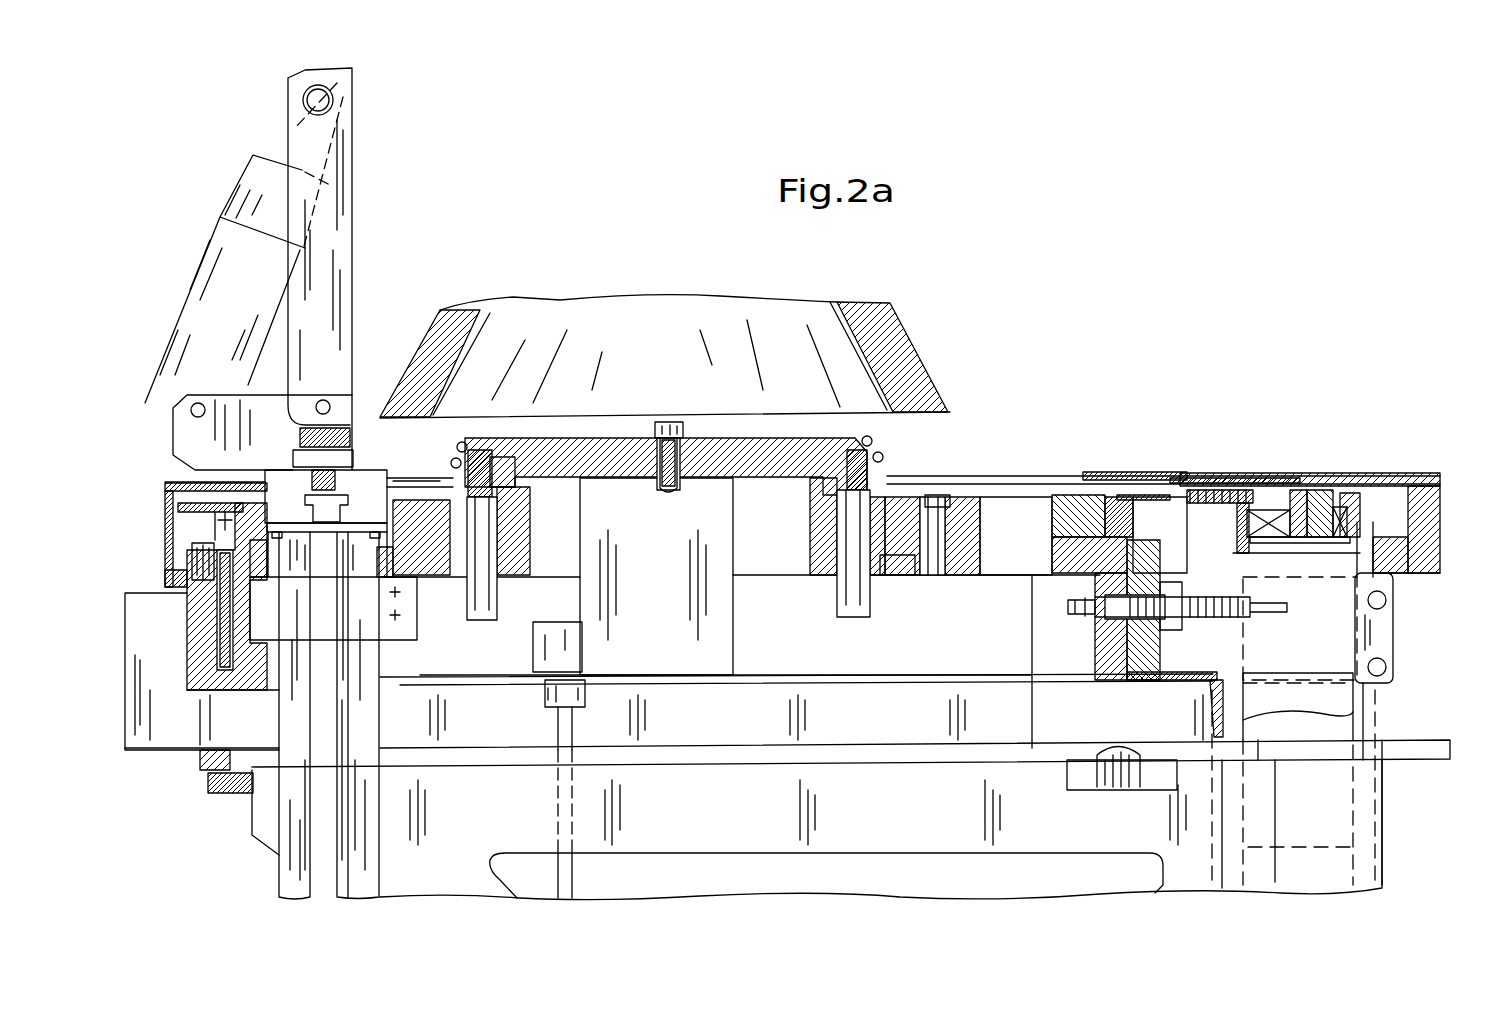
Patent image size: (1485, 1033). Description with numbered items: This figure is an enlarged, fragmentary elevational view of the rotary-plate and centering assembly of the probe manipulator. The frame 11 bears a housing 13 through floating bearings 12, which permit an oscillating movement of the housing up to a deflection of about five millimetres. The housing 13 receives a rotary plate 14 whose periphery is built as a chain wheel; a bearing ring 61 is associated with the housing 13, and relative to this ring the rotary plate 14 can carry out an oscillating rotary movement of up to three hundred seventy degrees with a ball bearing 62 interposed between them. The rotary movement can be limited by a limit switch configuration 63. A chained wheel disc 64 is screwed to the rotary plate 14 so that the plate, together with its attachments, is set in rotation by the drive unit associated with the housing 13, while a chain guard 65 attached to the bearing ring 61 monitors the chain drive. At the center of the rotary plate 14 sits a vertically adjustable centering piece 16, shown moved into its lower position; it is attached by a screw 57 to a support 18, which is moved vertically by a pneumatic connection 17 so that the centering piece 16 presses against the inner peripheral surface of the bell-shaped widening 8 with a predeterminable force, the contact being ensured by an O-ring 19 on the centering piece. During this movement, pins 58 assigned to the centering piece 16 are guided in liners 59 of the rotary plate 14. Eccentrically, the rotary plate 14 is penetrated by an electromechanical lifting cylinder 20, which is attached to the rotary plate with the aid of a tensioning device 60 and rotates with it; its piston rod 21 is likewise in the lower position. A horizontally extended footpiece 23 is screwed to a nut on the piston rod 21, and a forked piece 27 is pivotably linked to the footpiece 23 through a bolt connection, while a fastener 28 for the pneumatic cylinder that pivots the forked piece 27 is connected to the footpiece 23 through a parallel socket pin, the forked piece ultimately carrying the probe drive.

The bell-shaped widening 8 is at (898, 350).
The frame 11 is at (860, 830).
The floating bearings 12 is at (1118, 782).
The housing 13 is at (150, 738).
The rotary plate 14 is at (963, 505).
The centering piece 16 is at (785, 440).
The pneumatic connection 17 is at (557, 796).
The support 18 is at (672, 490).
The O-ring 19 is at (873, 443).
The electromechanical lifting cylinder 20 is at (318, 834).
The piston rod 21 is at (330, 503).
The footpiece 23 is at (196, 440).
The forked piece 27 is at (338, 234).
The fastener 28 is at (222, 248).
The screw 57 is at (666, 422).
The pins 58 is at (850, 605).
The liners 59 is at (824, 562).
The tensioning device 60 is at (425, 634).
The bearing ring 61 is at (195, 622).
The ball bearing 62 is at (188, 692).
The limit switch configuration 63 is at (1050, 612).
The chained wheel disc 64 is at (1140, 496).
The chain guard 65 is at (1258, 462).